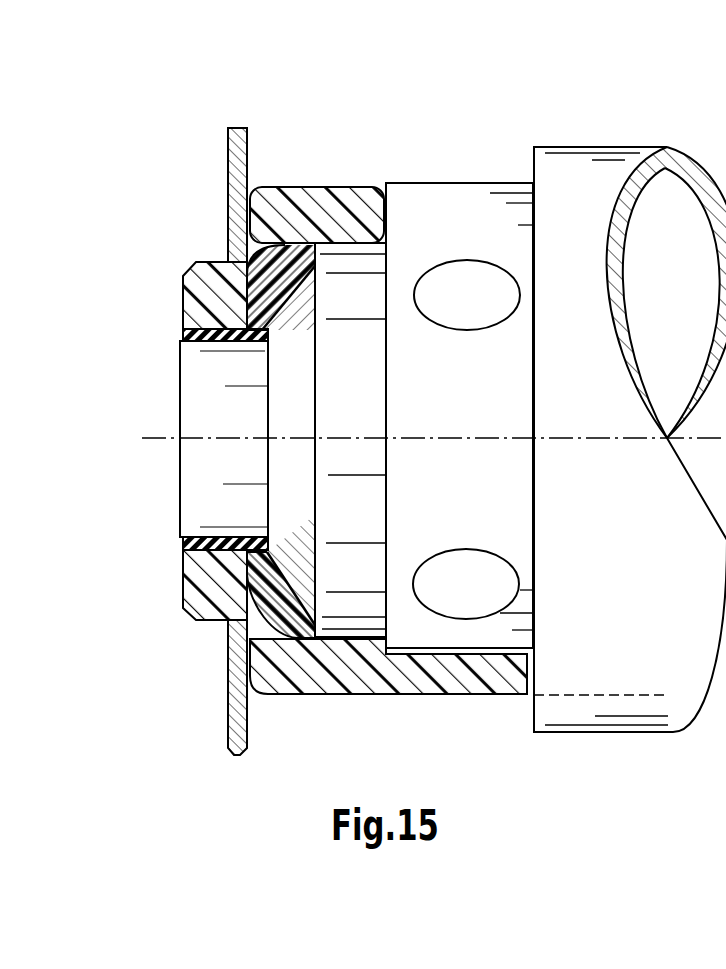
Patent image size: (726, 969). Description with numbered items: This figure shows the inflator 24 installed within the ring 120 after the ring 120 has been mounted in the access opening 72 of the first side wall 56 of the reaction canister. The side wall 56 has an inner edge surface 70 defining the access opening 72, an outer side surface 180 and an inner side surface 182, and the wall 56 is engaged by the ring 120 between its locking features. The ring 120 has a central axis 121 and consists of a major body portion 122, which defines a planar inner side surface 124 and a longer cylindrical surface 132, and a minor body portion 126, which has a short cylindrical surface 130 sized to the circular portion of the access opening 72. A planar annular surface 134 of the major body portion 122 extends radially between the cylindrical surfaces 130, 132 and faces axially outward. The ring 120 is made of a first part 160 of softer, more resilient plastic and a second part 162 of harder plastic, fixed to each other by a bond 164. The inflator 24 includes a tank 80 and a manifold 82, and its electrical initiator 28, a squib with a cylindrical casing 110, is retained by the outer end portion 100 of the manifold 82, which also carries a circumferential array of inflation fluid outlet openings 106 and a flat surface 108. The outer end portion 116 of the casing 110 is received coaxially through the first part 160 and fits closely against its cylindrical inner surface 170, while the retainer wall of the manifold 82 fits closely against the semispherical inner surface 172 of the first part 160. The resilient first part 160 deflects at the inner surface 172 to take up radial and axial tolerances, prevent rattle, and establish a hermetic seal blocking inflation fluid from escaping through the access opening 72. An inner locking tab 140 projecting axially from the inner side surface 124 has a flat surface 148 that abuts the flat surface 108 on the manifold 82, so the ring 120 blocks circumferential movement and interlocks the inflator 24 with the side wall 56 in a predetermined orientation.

The inflator 24 is at (316, 422).
The electrical initiator 28 is at (165, 439).
The first side wall 56 is at (238, 128).
The inner edge surface 70 is at (169, 595).
The access opening 72 is at (232, 594).
The tank 80 is at (568, 147).
The manifold 82 is at (512, 364).
The outer end portion of the manifold 100 is at (509, 183).
The inflation fluid outlet openings 106 is at (503, 325).
The flat surface 108 is at (437, 682).
The casing 110 is at (218, 487).
The outer end portion of the casing 116 is at (243, 553).
The ring 120 is at (158, 315).
The central axis 121 is at (152, 436).
The major body portion 122 is at (333, 210).
The planar inner side surface 124 is at (388, 202).
The minor body portion 126 is at (184, 294).
The short cylindrical surface 130 is at (212, 262).
The longer cylindrical surface 132 is at (338, 694).
The planar annular surface 134 is at (243, 222).
The inner locking tab 140 is at (492, 694).
The flat surface of the inner locking tab 148 is at (488, 652).
The first part 160 is at (270, 329).
The second part 162 is at (388, 218).
The bond 164 is at (226, 337).
The cylindrical inner surface 170 is at (220, 545).
The semispherical inner surface 172 is at (272, 612).
The outer side surface 180 is at (222, 160).
The inner side surface 182 is at (250, 155).